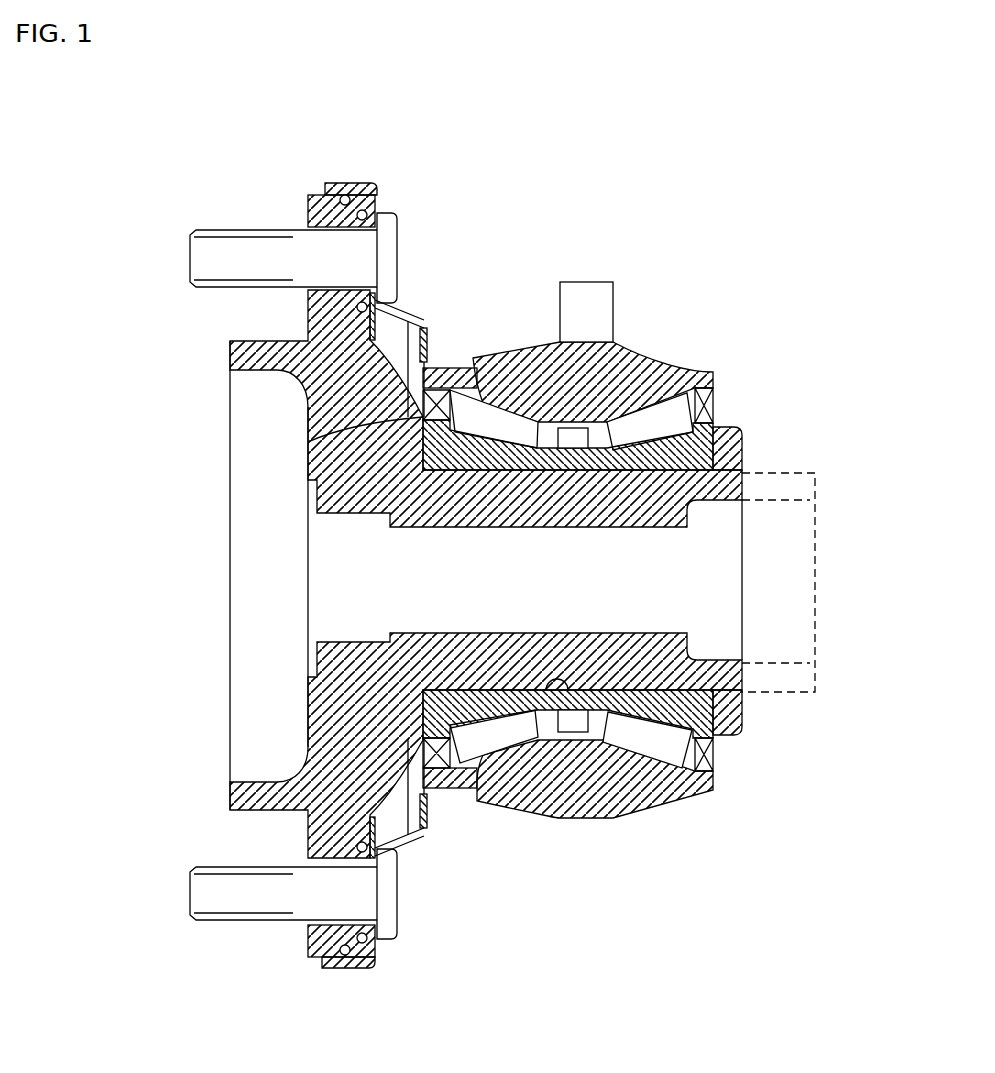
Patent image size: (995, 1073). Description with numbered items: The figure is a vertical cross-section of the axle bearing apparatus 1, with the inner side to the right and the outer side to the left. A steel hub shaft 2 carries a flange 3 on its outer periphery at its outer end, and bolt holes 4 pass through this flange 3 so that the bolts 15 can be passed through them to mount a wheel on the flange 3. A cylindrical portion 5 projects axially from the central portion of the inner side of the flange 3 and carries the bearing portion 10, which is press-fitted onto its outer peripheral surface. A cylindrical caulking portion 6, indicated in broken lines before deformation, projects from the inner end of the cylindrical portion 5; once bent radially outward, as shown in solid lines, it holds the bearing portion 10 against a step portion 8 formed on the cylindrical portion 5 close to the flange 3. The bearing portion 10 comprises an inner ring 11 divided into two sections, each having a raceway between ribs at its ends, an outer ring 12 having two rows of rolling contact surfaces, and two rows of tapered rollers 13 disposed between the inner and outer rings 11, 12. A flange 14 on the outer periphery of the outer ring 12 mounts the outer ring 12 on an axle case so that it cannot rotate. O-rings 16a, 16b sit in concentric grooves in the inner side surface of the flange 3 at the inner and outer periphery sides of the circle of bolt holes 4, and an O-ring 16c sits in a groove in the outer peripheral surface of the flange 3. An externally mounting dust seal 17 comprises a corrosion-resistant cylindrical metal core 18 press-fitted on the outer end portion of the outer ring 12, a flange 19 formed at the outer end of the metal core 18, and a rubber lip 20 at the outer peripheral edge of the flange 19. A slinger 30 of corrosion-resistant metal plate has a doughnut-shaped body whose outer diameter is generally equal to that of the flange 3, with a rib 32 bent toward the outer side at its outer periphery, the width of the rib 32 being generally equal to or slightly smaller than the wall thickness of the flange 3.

The axle bearing apparatus 1 is at (690, 815).
The hub shaft 2 is at (206, 748).
The flange 3 is at (308, 207).
The bolt holes 4 is at (318, 195).
The cylindrical portion 5 is at (570, 693).
The caulking portion 6 is at (735, 428).
The step portion 8 is at (337, 433).
The bearing portion 10 is at (678, 329).
The inner ring 11 is at (470, 363).
The outer ring 12 is at (625, 363).
The tapered rollers 13 is at (660, 417).
The flange 14 is at (580, 293).
The hub bolt 15 is at (205, 258).
The O-ring 16a is at (305, 308).
The O-ring 16b is at (377, 210).
The O-ring 16c is at (352, 187).
The dust seal 17 is at (450, 818).
The metal core 18 is at (453, 790).
The flange 19 is at (425, 830).
The lip 20 is at (405, 837).
The slinger 30 is at (380, 175).
The rib 32 is at (347, 970).